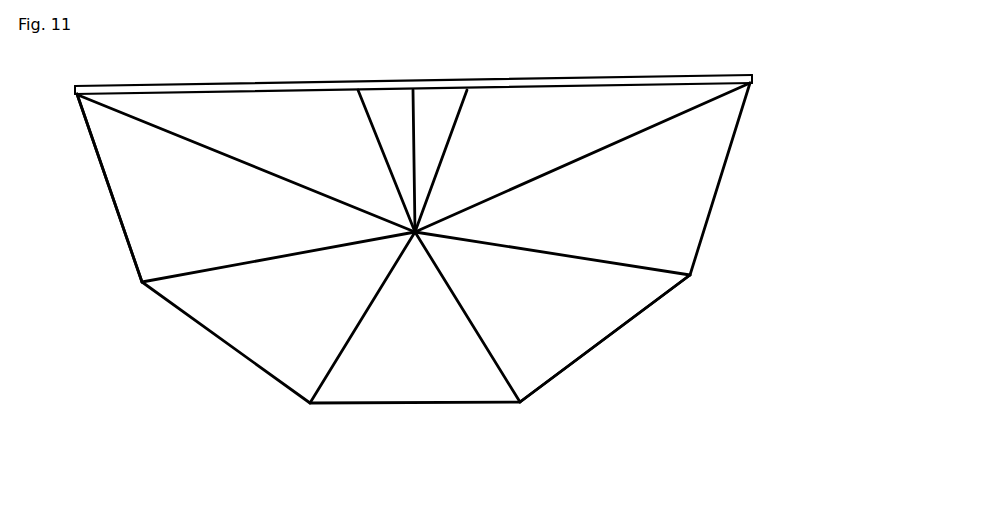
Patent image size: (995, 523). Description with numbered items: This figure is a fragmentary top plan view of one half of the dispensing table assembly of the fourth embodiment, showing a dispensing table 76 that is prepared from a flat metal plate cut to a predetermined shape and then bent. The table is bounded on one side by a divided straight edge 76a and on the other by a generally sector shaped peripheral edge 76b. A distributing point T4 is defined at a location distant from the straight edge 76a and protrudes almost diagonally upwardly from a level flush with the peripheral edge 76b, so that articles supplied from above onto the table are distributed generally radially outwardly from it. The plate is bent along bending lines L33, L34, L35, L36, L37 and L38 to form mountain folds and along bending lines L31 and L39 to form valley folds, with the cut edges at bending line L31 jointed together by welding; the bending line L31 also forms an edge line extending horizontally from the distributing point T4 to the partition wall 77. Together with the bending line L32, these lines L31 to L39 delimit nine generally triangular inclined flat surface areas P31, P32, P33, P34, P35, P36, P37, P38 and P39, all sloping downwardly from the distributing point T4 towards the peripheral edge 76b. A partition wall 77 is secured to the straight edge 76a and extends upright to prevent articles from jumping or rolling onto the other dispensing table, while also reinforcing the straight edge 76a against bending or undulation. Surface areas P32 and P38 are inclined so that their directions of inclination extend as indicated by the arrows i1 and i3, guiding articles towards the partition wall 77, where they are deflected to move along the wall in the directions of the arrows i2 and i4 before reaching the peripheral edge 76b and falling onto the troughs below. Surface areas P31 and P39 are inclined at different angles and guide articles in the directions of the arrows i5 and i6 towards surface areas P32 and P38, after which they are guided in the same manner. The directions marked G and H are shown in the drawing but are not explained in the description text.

The partition wall 77 is at (652, 75).
The dispensing table 76 is at (763, 160).
The divided straight edge 76a is at (295, 95).
The sector shaped peripheral edge 76b is at (630, 322).
The direction H is at (763, 195).
The direction G is at (401, 425).
The distributing point T4 is at (400, 224).
The bending line L31 is at (412, 88).
The bending line L32 is at (455, 110).
The bending line L33 is at (593, 156).
The bending line L34 is at (590, 262).
The bending line L35 is at (478, 342).
The bending line L36 is at (358, 335).
The bending line L37 is at (200, 273).
The bending line L38 is at (222, 158).
The bending line L39 is at (335, 83).
The inclined flat surface area P31 is at (438, 98).
The inclined flat surface area P32 is at (523, 95).
The inclined flat surface area P33 is at (683, 237).
The inclined flat surface area P34 is at (555, 362).
The inclined flat surface area P35 is at (448, 397).
The inclined flat surface area P36 is at (277, 365).
The inclined flat surface area P37 is at (132, 215).
The inclined flat surface area P38 is at (185, 107).
The inclined flat surface area P39 is at (382, 105).
The arrow i1 is at (493, 108).
The arrow i2 is at (605, 100).
The arrow i3 is at (345, 152).
The arrow i4 is at (268, 105).
The arrow i5 is at (465, 130).
The arrow i6 is at (360, 130).